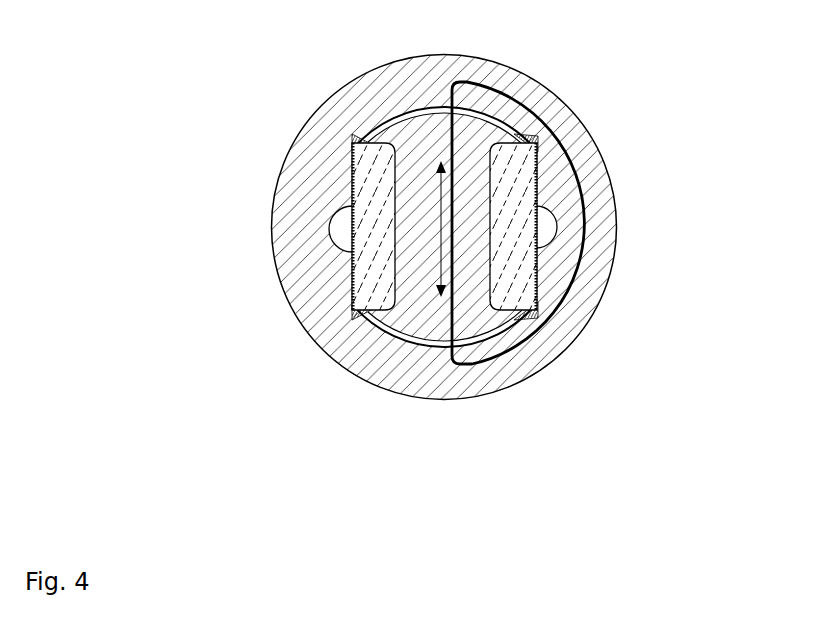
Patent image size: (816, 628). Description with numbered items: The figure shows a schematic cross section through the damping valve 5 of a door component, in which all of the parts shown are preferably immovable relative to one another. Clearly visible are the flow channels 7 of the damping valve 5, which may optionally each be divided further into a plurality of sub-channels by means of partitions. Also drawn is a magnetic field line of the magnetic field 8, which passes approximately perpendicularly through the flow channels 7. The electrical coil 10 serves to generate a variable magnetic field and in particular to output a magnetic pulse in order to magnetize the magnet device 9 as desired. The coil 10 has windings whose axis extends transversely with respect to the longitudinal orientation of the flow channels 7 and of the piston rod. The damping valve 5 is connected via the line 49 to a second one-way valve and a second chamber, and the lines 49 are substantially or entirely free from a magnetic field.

The damping valve 5 is at (193, 99).
The flow channels 7 is at (402, 115).
The magnetic field 8 is at (530, 108).
The magnet device 9 is at (486, 153).
The electrical coil 10 is at (525, 176).
The line 49 is at (343, 230).